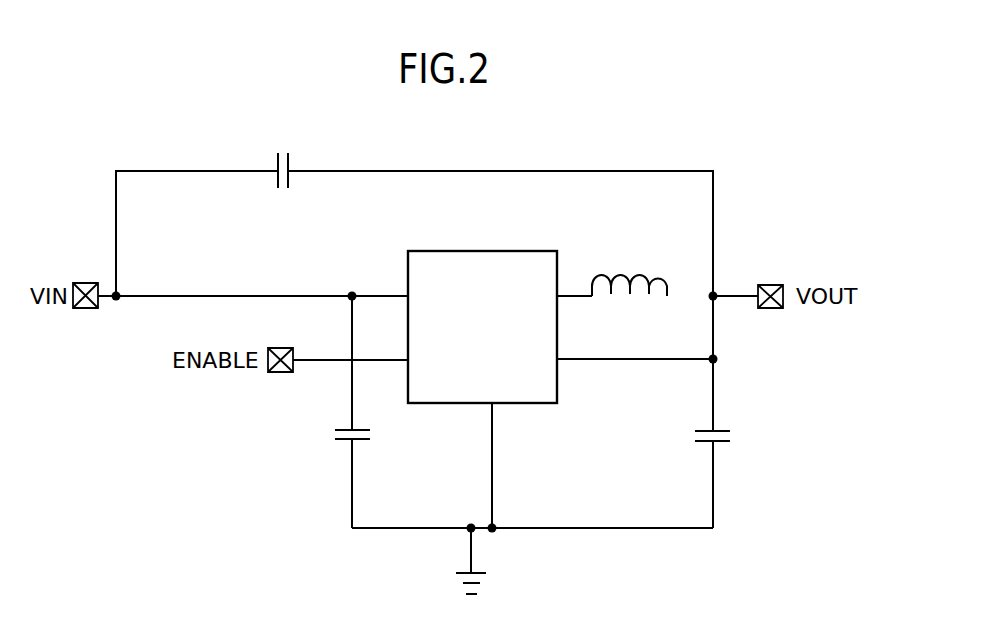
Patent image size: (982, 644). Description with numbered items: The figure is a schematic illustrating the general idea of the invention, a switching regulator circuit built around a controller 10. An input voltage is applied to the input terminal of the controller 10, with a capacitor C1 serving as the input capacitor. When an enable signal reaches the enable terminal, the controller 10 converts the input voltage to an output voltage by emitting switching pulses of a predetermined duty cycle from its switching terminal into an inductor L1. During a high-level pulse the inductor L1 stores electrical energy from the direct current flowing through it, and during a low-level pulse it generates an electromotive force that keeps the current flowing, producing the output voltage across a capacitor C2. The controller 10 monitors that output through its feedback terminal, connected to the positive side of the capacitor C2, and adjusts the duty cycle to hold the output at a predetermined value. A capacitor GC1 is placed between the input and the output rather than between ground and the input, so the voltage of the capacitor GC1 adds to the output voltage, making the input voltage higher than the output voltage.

The controller 10 is at (473, 251).
The capacitor GC1 is at (285, 158).
The inductor L1 is at (629, 270).
The capacitor C1 is at (372, 434).
The capacitor C2 is at (732, 435).